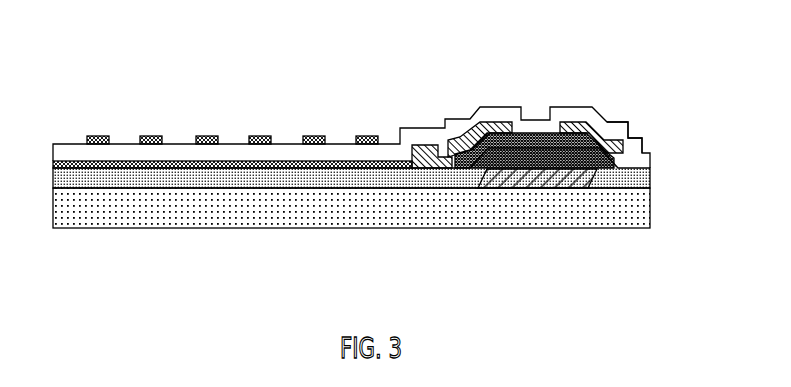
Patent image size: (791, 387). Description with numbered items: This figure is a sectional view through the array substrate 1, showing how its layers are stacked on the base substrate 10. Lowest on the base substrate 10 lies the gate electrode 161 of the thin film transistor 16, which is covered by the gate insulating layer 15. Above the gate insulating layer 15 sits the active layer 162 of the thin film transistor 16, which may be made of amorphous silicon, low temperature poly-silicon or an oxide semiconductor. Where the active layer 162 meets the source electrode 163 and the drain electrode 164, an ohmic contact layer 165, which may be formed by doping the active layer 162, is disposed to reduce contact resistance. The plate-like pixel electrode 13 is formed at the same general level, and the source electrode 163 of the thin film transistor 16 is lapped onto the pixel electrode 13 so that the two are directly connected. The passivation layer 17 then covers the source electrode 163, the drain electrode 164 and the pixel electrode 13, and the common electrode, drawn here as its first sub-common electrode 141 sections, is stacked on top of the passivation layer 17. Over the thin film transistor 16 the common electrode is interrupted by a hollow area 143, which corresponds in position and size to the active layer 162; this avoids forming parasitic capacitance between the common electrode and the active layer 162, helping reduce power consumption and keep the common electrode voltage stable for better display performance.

The array substrate 1 is at (83, 46).
The base substrate 10 is at (113, 200).
The pixel electrode 13 is at (233, 163).
The gate insulating layer 15 is at (173, 180).
The thin film transistor 16 is at (517, 108).
The passivation layer 17 is at (287, 150).
The first sub-common electrode 141 is at (365, 140).
The hollow area 143 is at (632, 112).
The gate electrode 161 is at (555, 183).
The active layer 162 is at (518, 140).
The source electrode 163 is at (428, 165).
The drain electrode 164 is at (591, 109).
The ohmic contact layer 165 is at (465, 145).